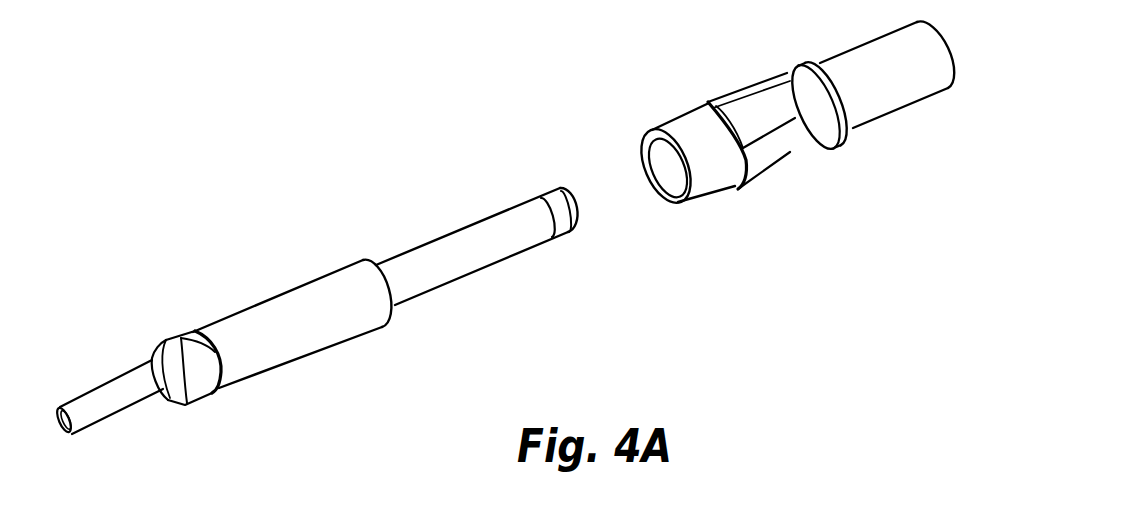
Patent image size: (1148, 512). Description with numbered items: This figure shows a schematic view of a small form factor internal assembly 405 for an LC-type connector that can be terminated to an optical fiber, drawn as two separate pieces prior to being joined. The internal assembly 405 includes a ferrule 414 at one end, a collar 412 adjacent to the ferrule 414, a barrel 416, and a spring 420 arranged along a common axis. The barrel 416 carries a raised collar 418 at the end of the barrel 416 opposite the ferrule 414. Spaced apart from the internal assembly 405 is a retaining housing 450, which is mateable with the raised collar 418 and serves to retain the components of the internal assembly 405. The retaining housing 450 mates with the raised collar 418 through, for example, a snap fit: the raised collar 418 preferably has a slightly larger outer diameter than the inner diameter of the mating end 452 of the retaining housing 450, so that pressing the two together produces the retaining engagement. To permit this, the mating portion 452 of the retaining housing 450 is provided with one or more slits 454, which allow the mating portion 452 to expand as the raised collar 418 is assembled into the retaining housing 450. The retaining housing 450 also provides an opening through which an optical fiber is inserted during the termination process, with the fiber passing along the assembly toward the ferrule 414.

The internal assembly 405 is at (272, 212).
The collar 412 is at (183, 342).
The ferrule 414 is at (107, 412).
The barrel 416 is at (468, 237).
The raised collar 418 is at (540, 202).
The spring 420 is at (272, 304).
The retaining housing 450 is at (868, 52).
The mating end 452 is at (663, 173).
The slit 454 is at (683, 127).